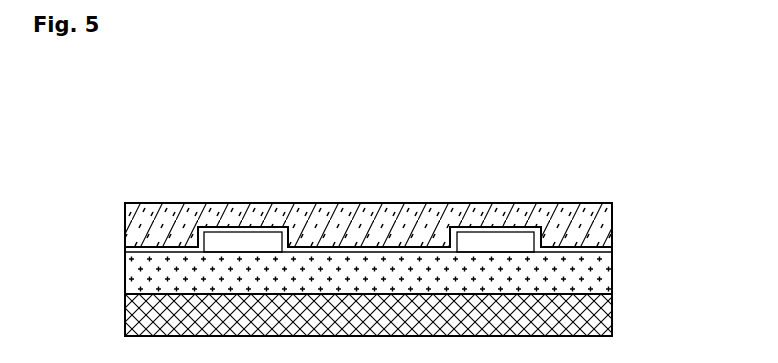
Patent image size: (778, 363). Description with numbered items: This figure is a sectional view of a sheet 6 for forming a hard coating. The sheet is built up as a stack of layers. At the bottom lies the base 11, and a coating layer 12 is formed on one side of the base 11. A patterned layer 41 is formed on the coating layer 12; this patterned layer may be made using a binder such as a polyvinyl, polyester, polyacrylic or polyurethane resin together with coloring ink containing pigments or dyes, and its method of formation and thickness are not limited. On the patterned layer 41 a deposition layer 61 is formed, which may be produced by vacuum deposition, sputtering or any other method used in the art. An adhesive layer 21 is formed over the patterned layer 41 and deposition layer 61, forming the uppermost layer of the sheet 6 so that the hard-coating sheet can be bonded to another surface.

The sheet for forming a hard coating 6 is at (399, 166).
The adhesive layer 21 is at (613, 220).
The deposition layer 61 is at (124, 250).
The patterned layer 41 is at (501, 234).
The coating layer 12 is at (613, 271).
The base 11 is at (613, 318).